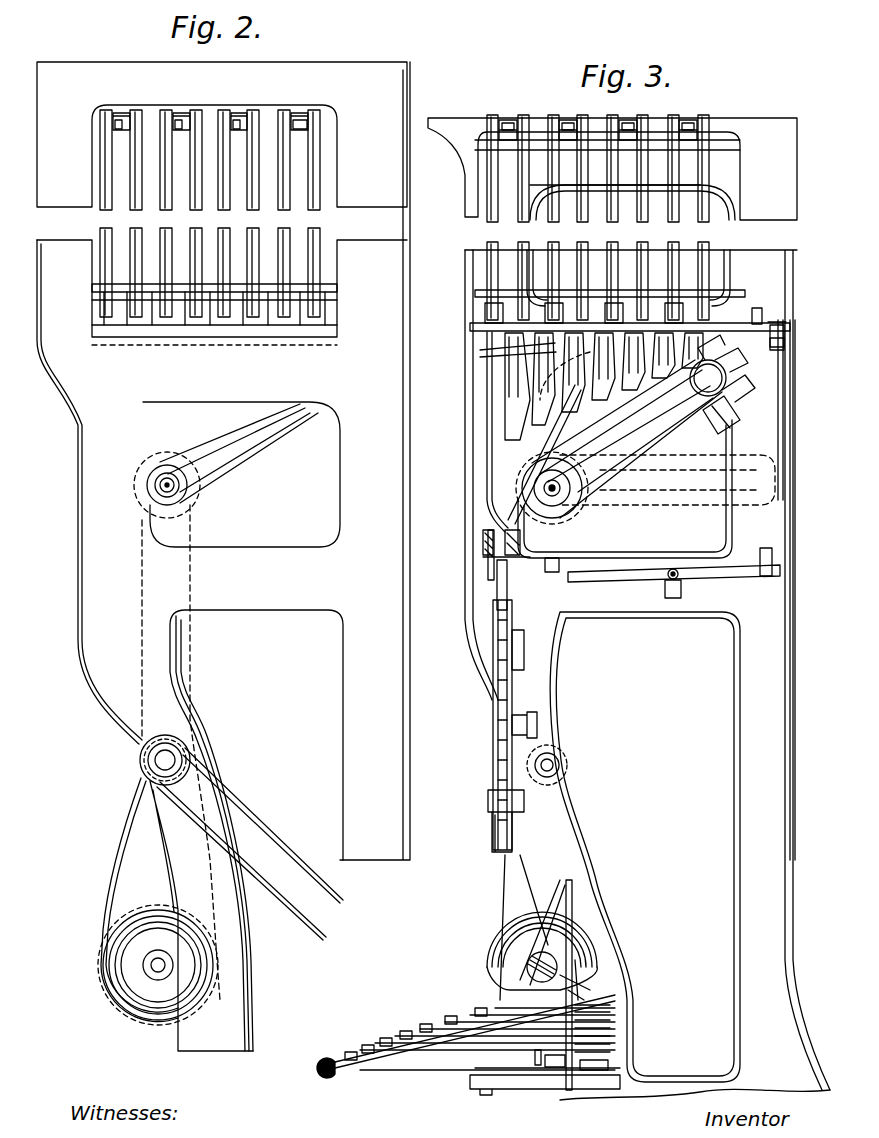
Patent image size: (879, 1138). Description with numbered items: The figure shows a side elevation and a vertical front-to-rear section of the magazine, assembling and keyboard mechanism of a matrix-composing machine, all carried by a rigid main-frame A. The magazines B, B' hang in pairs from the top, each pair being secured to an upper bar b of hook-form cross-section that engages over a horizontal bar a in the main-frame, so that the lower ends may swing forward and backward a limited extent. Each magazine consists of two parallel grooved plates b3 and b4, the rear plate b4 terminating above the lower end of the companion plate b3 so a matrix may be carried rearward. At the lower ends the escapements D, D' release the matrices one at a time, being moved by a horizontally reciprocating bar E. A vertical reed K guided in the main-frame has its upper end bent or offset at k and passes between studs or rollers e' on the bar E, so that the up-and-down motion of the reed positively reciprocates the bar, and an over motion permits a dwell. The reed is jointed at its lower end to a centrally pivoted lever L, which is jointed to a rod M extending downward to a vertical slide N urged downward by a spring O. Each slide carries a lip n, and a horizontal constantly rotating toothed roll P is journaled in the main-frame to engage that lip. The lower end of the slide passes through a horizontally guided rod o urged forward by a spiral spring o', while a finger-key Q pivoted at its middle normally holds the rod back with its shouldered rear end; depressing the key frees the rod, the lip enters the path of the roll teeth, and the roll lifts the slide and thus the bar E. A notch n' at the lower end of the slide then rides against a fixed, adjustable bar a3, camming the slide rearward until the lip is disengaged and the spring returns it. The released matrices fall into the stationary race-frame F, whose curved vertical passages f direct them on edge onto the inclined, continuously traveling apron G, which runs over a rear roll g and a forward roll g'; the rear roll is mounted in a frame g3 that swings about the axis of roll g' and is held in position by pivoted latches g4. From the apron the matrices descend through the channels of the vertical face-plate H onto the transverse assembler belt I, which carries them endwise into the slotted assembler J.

In FIG. 2, the main-frame A is at (385, 428).
In FIG. 3, the main-frame A is at (629, 609).
In FIG. 2, the magazine B is at (190, 213).
In FIG. 3, the magazine B is at (583, 217).
In FIG. 2, the magazine B' is at (228, 213).
In FIG. 3, the magazine B' is at (615, 217).
In FIG. 2, the horizontal bar a is at (118, 113).
In FIG. 3, the horizontal bar a is at (506, 118).
In FIG. 2, the upper bar b is at (124, 118).
In FIG. 3, the upper bar b is at (516, 122).
In FIG. 3, the magazine plate b3 is at (695, 202).
In FIG. 3, the rear plate b4 is at (680, 176).
In FIG. 2, the escapement D is at (198, 326).
In FIG. 3, the escapement D is at (614, 310).
In FIG. 2, the escapement D' is at (323, 344).
In FIG. 3, the screw e is at (790, 339).
In FIG. 3, the stud or roller e' is at (763, 300).
In FIG. 3, the offset portion k is at (780, 320).
In FIG. 3, the horizontally reciprocating bar E is at (786, 324).
In FIG. 3, the channel or passage f is at (480, 350).
In FIG. 3, the race-frame F is at (540, 398).
In FIG. 3, the sustaining roll g is at (725, 374).
In FIG. 2, the forward roll g' is at (183, 488).
In FIG. 3, the forward roll g' is at (564, 488).
In FIG. 2, the frame g3 is at (235, 448).
In FIG. 3, the frame g3 is at (622, 426).
In FIG. 3, the pivoted button or latch g4 is at (730, 428).
In FIG. 2, the apron G is at (275, 432).
In FIG. 3, the apron G is at (630, 455).
In FIG. 3, the reed K is at (790, 430).
In FIG. 3, the face-plate H is at (495, 585).
In FIG. 3, the assembler belt I is at (495, 726).
In FIG. 3, the assembler J is at (492, 822).
In FIG. 3, the lever L is at (700, 580).
In FIG. 3, the rod M is at (572, 668).
In FIG. 3, the vertical slide N is at (575, 918).
In FIG. 3, the lip n is at (609, 985).
In FIG. 3, the notch n' is at (566, 1089).
In FIG. 2, the roll P is at (152, 972).
In FIG. 3, the roll P is at (525, 955).
In FIG. 3, the spring O is at (580, 975).
In FIG. 3, the guide-rod o is at (592, 1059).
In FIG. 3, the spiral spring o' is at (603, 1072).
In FIG. 3, the finger-key Q is at (440, 1050).
In FIG. 3, the key q is at (535, 1058).
In FIG. 3, the fixed bar a3 is at (540, 1085).